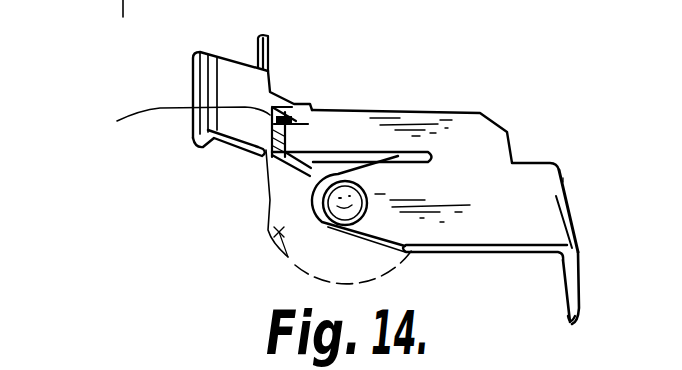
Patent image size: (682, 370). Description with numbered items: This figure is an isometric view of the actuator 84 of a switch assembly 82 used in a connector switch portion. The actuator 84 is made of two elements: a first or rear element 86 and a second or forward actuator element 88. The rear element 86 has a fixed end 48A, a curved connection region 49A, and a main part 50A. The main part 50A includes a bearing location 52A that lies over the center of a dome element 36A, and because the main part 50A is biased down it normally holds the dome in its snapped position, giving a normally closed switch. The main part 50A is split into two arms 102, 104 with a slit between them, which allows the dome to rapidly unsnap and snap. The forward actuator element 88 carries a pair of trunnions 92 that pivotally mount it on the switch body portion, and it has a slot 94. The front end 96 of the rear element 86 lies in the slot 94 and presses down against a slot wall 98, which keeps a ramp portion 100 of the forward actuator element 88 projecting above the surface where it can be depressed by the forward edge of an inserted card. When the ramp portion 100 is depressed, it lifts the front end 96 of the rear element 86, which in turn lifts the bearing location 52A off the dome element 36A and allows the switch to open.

The switch assembly 82 is at (178, 87).
The actuator 84 is at (183, 138).
The first or rear element 86 is at (497, 117).
The second or forward actuator element 88 is at (227, 55).
The trunnions 92 is at (266, 37).
The slot 94 is at (172, 123).
The front end 96 is at (288, 112).
The slot wall 98 is at (314, 108).
The ramp portion 100 is at (253, 143).
The arm 102 is at (416, 109).
The arm 104 is at (492, 240).
The main part 50A is at (511, 133).
The curved connection region 49A is at (562, 258).
The fixed end 48A is at (567, 294).
The dome element 36A is at (264, 236).
The bearing location 52A is at (288, 257).